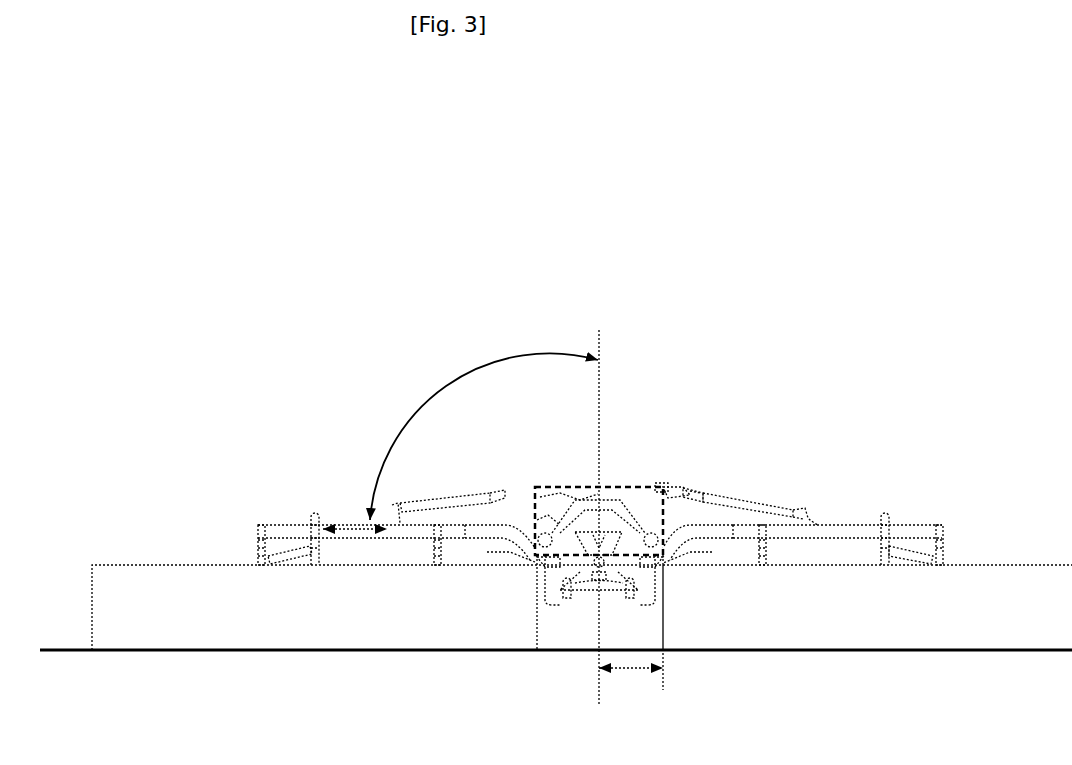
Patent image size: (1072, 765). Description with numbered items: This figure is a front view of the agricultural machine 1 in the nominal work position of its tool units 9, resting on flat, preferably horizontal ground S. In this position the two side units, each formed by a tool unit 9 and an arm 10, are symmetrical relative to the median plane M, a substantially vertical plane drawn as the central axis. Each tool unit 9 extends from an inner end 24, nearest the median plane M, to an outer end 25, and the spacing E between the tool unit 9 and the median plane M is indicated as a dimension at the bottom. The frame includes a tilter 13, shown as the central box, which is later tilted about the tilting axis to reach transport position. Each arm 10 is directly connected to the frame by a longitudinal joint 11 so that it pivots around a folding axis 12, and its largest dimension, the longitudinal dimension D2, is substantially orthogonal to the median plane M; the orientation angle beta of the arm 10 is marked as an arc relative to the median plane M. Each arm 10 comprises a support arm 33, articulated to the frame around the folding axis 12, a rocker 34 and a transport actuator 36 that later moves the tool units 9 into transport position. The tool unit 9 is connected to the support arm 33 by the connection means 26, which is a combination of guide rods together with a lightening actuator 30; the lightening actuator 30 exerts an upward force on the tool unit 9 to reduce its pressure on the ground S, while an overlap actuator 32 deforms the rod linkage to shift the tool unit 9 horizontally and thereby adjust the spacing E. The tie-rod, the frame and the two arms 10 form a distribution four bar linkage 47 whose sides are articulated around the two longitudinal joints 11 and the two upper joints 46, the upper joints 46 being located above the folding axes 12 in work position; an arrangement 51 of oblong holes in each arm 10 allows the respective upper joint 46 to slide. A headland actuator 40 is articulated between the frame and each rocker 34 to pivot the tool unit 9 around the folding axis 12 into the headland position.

The agricultural machine 1 is at (995, 376).
The tool unit 9 is at (150, 563).
The arm 10 is at (770, 398).
The longitudinal joint 11 is at (665, 563).
The folding axis 12 is at (538, 558).
The tilter 13 is at (600, 529).
The inner end 24 is at (549, 672).
The outer end 25 is at (83, 662).
The connection means 26 is at (242, 548).
The lightening actuator 30 is at (311, 540).
The overlap actuator 32 is at (270, 556).
The support arm 33 is at (422, 500).
The rocker 34 is at (522, 500).
The transport actuator 36 is at (790, 508).
The headland actuator 40 is at (580, 500).
The upper joint 46 is at (665, 482).
The distribution four bar linkage 47 is at (532, 522).
The arrangement 51 is at (685, 485).
The ground S is at (80, 650).
The median plane M is at (599, 690).
The spacing E is at (629, 670).
The longitudinal dimension D2 is at (358, 527).
The orientation angle beta is at (428, 395).